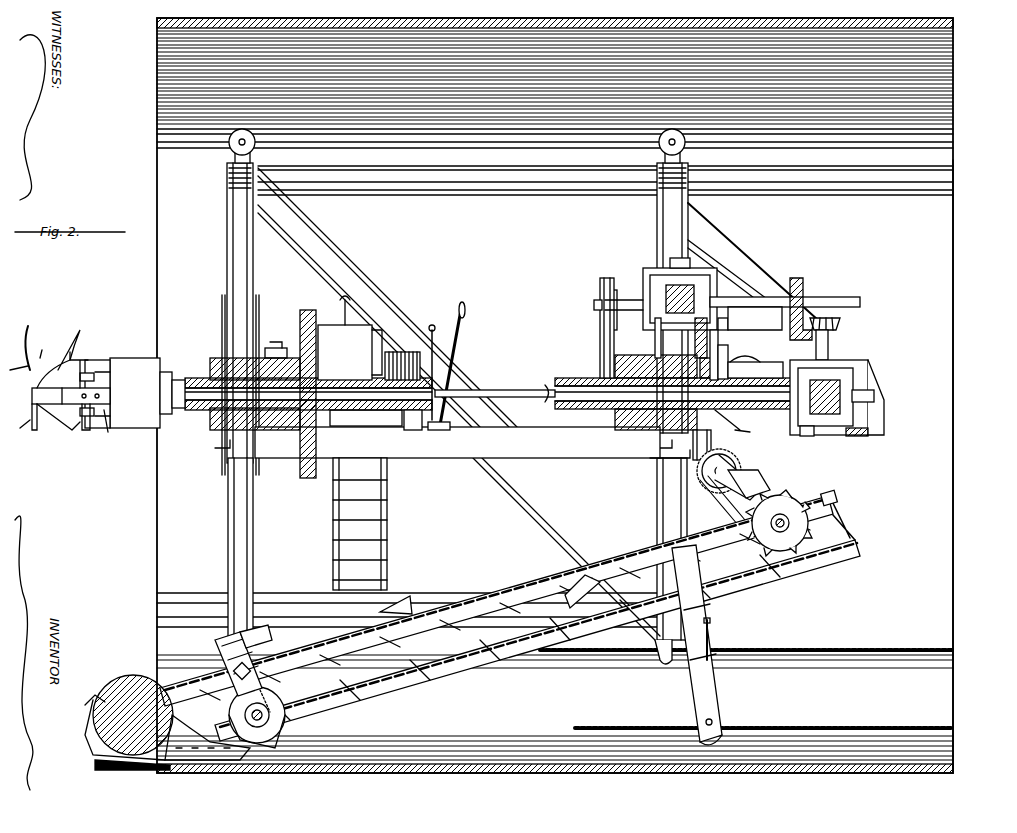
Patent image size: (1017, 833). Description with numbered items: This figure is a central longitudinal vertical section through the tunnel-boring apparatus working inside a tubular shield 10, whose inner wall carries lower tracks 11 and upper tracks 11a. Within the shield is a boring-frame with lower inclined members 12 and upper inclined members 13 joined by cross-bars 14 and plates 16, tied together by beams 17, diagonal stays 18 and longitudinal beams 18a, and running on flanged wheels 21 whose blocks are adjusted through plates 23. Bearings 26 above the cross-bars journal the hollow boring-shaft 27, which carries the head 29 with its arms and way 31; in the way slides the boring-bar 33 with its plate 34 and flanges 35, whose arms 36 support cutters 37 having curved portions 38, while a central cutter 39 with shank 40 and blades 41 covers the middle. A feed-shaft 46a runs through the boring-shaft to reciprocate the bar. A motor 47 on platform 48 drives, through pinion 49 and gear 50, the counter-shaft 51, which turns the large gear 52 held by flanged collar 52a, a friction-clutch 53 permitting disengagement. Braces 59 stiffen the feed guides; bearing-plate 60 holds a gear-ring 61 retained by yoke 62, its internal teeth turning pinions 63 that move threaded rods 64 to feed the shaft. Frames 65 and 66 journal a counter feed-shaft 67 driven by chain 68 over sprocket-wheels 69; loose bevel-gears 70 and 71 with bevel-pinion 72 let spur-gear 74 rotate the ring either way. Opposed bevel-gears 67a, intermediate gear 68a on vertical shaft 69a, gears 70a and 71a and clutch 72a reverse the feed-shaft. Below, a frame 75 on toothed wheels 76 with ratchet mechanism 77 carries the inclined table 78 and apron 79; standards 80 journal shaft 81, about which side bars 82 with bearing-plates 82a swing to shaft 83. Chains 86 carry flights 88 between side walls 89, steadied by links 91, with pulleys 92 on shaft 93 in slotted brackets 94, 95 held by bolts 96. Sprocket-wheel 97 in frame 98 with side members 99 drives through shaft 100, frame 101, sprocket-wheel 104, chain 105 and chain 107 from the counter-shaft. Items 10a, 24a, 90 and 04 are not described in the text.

The shield 10 is at (555, 395).
The frame side 10a is at (904, 466).
The lower tracks 11 is at (953, 656).
The upper tracks 11a is at (985, 138).
The lower inclined members 12 is at (253, 546).
The upper inclined members 13 is at (253, 296).
The cross-bars 14 is at (214, 455).
The plates 16 is at (222, 305).
The connecting beams 17 is at (455, 188).
The diagonal beams 18 is at (415, 330).
The longitudinal beams 18a is at (482, 465).
The wheels 21 is at (658, 660).
The plates 23 is at (656, 318).
The lower track chain 24a is at (953, 733).
The bearings 26 is at (212, 372).
The boring-shaft 27 is at (566, 370).
The head 29 is at (147, 393).
The way 31 is at (115, 430).
The boring-bar 33 is at (91, 370).
The plate 34 is at (82, 416).
The flanges 35 is at (80, 358).
The arms 36 is at (50, 396).
The cutters 37 is at (15, 425).
The curved portions 38 is at (65, 345).
The cutter 39 is at (25, 335).
The shank 40 is at (50, 340).
The blades 41 is at (14, 360).
The feed-shaft 46a is at (548, 405).
The motor 47 is at (350, 338).
The platform 48 is at (360, 418).
The pinion 49 is at (413, 345).
The gear 50 is at (418, 432).
The counter-shaft 51 is at (510, 388).
The large gear 52 is at (312, 316).
The flanged collar 52a is at (286, 356).
The friction-clutch 53 is at (456, 378).
The inclined braces 59 is at (702, 226).
The bearing-plate 60 is at (690, 350).
The gear-ring 61 is at (722, 340).
The yoke 62 is at (735, 358).
The pinions 63 is at (722, 318).
The threaded rods 64 is at (752, 360).
The frame 65 is at (718, 282).
The frame 66 is at (836, 360).
The counter feed-shaft 67 is at (848, 296).
The opposed bevel-gears 67a is at (806, 440).
The chain 68 is at (604, 335).
The intermediate bevel-gear 68a is at (858, 380).
The sprocket-wheels 69 is at (600, 306).
The vertical shaft 69a is at (830, 340).
The bevel-gear 70 is at (735, 268).
The bevel-gear 70a is at (842, 316).
The bevel-gear 71 is at (640, 286).
The bevel-gear 71a is at (805, 280).
The bevel-pinion 72 is at (658, 280).
The friction-clutch 72a is at (854, 440).
The spur-gear 74 is at (730, 319).
The frame 75 is at (690, 673).
The toothed wheels 76 is at (715, 735).
The ratchet mechanism 77 is at (708, 670).
The table 78 is at (824, 560).
The apron 79 is at (85, 768).
The slotted standards 80 is at (402, 593).
The shaft 81 is at (770, 523).
The side bars 82 is at (496, 601).
The bearing-plate 82a is at (842, 484).
The shaft 83 is at (860, 485).
The chains 86 is at (805, 538).
The flights 88 is at (730, 600).
The side walls 89 is at (772, 568).
The hanger 90 is at (545, 566).
The links 91 is at (565, 572).
The pulleys 92 is at (270, 720).
The shaft 93 is at (207, 736).
The brackets 94 is at (218, 632).
The slots 95 is at (210, 634).
The bolts 96 is at (237, 687).
The wheel hub 04 is at (285, 700).
The sprocket-wheel 97 is at (129, 717).
The frame 98 is at (134, 697).
The side members 99 is at (742, 472).
The shaft 100 is at (705, 478).
The frame 101 is at (655, 448).
The sprocket-wheel 104 is at (715, 492).
The chain 105 is at (770, 478).
The chain 107 is at (695, 466).